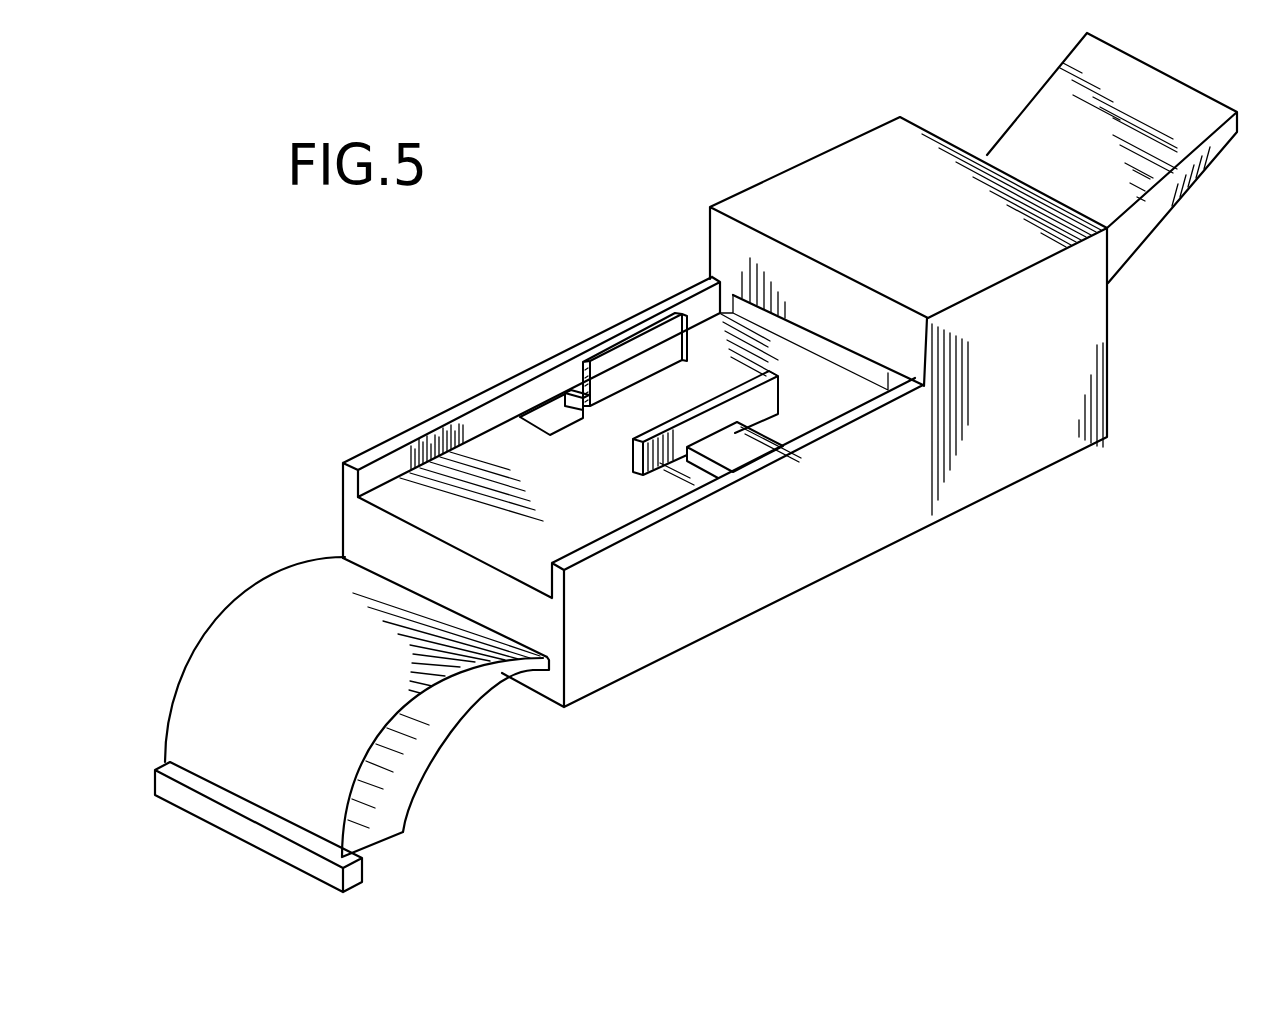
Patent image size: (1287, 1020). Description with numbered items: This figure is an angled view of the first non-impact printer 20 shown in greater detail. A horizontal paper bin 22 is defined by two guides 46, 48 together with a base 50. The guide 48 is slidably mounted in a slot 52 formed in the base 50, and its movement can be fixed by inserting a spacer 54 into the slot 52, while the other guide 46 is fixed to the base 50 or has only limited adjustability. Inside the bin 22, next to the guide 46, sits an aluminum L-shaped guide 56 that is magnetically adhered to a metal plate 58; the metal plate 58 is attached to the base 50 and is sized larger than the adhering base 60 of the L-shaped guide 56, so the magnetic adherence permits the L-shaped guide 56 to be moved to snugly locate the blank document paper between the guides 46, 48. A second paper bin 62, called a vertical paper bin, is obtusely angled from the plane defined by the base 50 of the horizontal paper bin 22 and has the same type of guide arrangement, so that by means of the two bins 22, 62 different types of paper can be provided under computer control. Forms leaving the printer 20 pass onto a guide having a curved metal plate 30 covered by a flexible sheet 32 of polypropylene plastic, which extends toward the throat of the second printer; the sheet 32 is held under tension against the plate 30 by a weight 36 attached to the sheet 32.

The printer 20 is at (1095, 355).
The horizontal paper bin 22 is at (715, 353).
The curved metal plate 30 is at (468, 697).
The flexible sheet 32 is at (320, 573).
The weight 36 is at (353, 862).
The guide 46 is at (440, 417).
The guide 48 is at (645, 473).
The base 50 is at (388, 490).
The slot 52 is at (710, 477).
The spacer 54 is at (757, 446).
The L-shaped guide 56 is at (610, 353).
The metal plate 58 is at (540, 408).
The adhering base 60 is at (573, 400).
The second paper bin 62 is at (1200, 104).